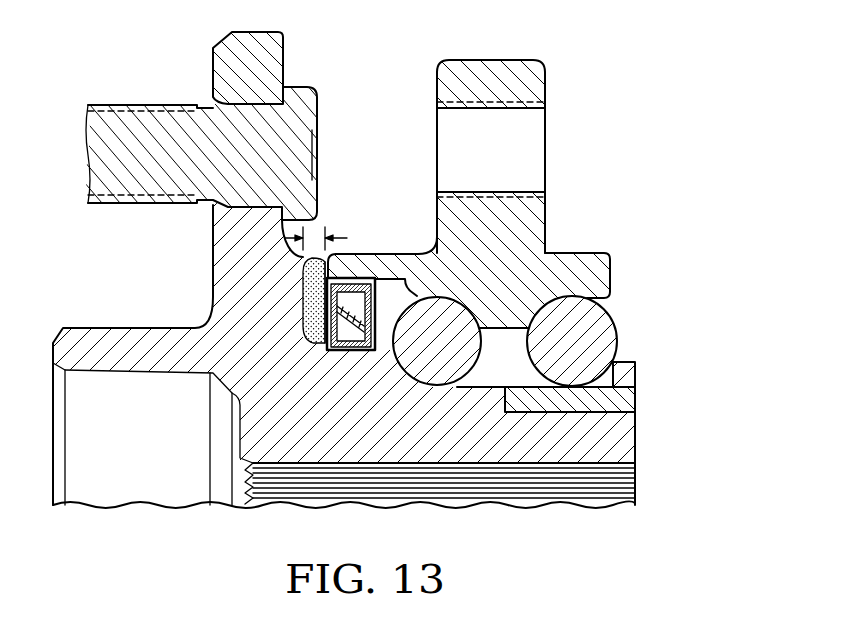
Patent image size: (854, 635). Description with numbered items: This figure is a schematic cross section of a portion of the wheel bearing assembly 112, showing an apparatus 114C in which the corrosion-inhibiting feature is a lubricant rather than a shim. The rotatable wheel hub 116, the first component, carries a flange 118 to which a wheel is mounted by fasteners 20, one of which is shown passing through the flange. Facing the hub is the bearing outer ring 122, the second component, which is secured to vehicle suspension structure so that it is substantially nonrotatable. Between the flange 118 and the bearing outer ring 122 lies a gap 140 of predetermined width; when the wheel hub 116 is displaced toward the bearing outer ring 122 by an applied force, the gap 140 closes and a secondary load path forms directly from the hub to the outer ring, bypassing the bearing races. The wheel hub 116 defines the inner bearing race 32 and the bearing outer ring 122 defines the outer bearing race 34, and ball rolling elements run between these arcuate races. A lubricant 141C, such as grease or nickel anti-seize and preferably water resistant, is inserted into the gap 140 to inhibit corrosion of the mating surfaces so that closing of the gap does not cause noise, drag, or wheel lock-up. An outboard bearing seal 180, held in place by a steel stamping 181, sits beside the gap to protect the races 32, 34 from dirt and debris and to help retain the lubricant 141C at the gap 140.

The fasteners 20 is at (122, 205).
The inner bearing race 32 is at (468, 312).
The outer bearing race 34 is at (411, 372).
The wheel bearing assembly 112 is at (582, 120).
The apparatus 114C is at (364, 216).
The rotatable wheel hub 116 is at (597, 440).
The flange 118 is at (228, 258).
The bearing outer ring 122 is at (547, 222).
The gap 140 is at (346, 232).
The lubricant 141C is at (319, 270).
The outboard bearing seal 180 is at (307, 338).
The steel stamping 181 is at (390, 322).